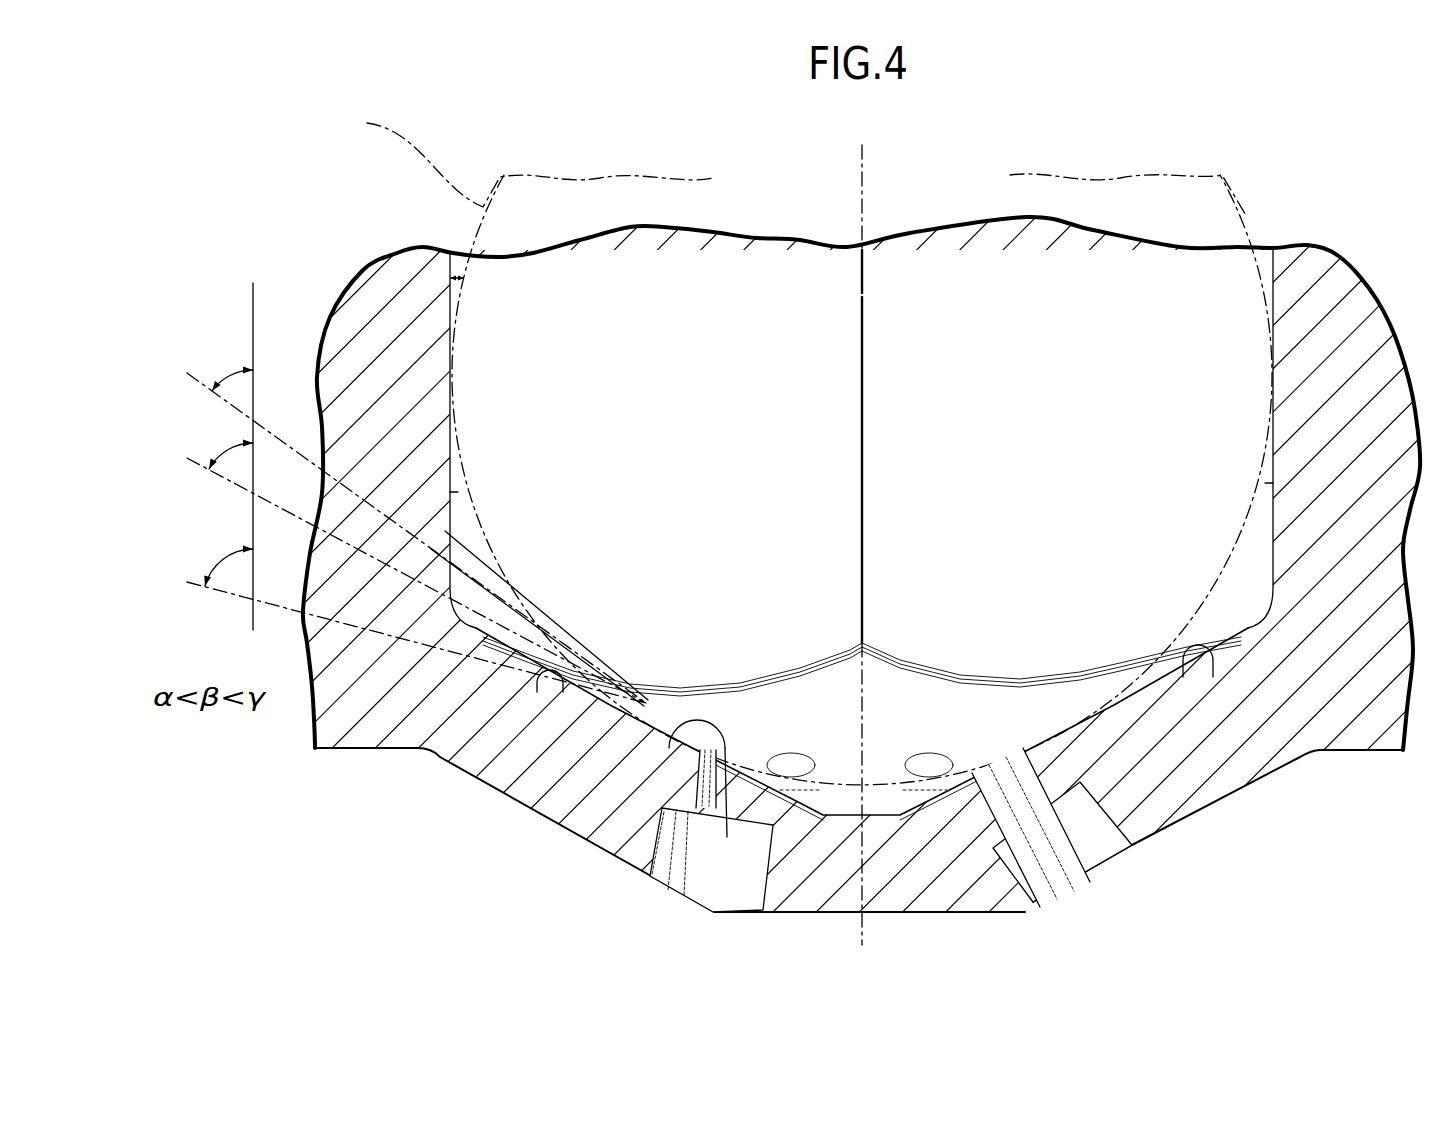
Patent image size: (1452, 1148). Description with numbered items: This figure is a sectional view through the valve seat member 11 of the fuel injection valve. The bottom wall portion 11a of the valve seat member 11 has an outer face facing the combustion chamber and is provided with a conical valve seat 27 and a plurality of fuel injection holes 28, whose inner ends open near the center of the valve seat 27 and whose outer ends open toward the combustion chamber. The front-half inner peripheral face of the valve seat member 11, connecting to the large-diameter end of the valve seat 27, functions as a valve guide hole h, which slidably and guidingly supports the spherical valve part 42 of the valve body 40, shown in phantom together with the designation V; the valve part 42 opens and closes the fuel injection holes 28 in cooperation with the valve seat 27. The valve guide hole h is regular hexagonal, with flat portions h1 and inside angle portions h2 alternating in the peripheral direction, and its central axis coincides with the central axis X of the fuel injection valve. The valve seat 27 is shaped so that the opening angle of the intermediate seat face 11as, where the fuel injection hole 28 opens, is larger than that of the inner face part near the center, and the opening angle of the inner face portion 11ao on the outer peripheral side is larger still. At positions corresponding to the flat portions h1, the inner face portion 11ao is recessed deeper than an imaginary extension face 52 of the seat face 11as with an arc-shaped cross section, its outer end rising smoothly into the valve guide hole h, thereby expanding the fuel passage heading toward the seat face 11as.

The valve seat member 11 is at (1350, 760).
The bottom wall portion 11a is at (588, 855).
The inner face portion on the outer peripheral side 11ao is at (562, 692).
The seat face 11as is at (879, 813).
The valve seat 27 is at (1053, 720).
The fuel injection hole 28 is at (657, 858).
The imaginary extension face 52 is at (515, 610).
The valve part 42 is at (767, 450).
The valve body 40 is at (767, 450).
The valve V is at (767, 450).
The central axis X is at (865, 178).
The valve guide hole h is at (462, 282).
The flat portion h1 is at (460, 492).
The inside angle portion h2 is at (864, 343).